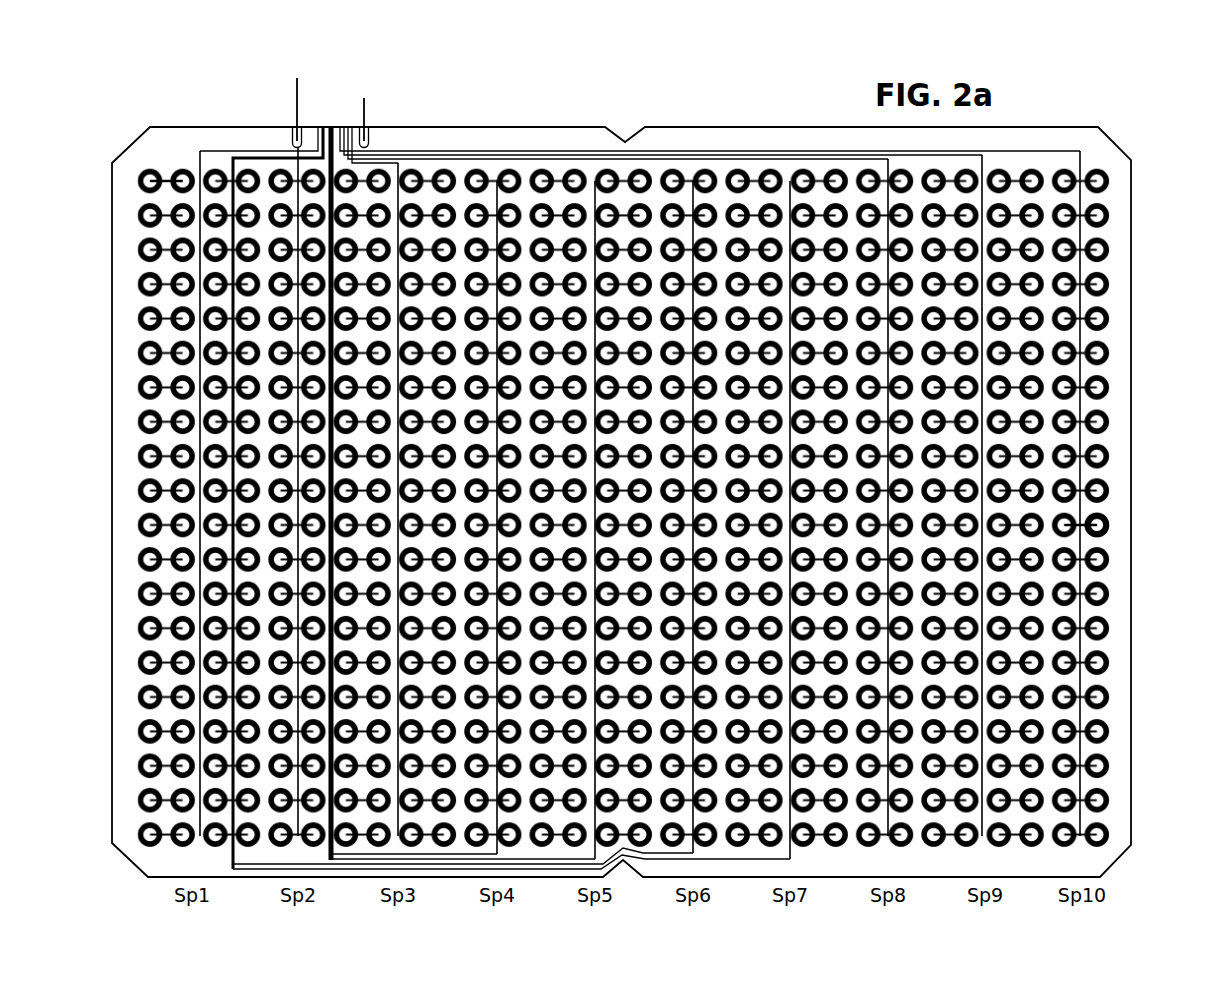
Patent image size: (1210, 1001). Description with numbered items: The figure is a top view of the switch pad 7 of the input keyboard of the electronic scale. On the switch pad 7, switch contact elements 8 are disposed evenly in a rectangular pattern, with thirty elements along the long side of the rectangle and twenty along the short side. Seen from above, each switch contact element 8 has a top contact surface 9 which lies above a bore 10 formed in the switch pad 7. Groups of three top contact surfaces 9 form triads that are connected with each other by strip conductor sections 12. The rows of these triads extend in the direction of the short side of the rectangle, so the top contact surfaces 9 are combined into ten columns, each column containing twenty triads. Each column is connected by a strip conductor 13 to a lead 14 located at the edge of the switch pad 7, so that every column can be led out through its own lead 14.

The switch pad 7 is at (1136, 439).
The switch contact element 8 is at (1109, 515).
The top contact surface 9 is at (1097, 528).
The bore 10 is at (1103, 537).
The strip conductor section 12 is at (193, 168).
The strip conductor 13 is at (218, 150).
The lead 14 is at (313, 118).